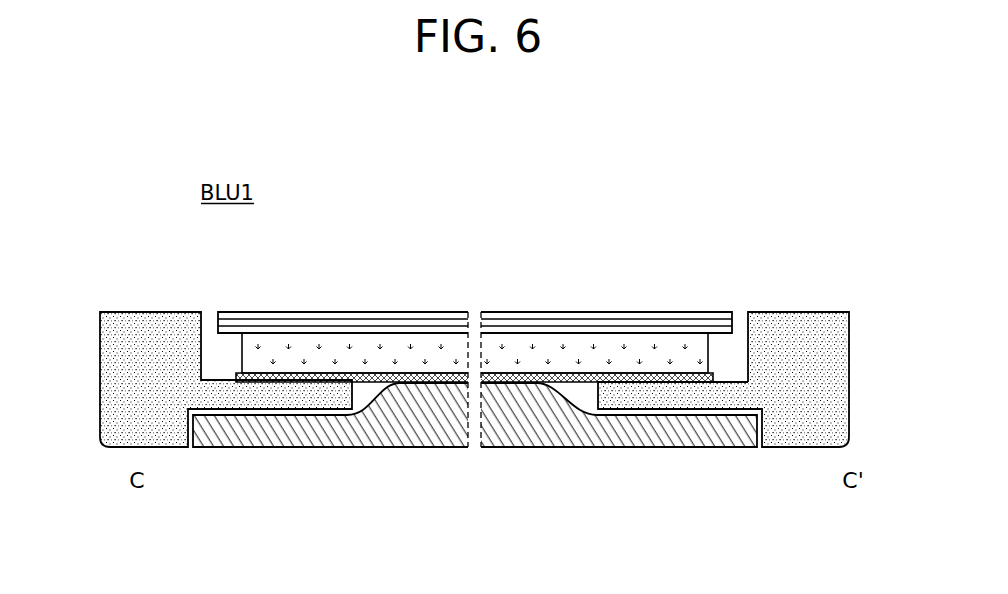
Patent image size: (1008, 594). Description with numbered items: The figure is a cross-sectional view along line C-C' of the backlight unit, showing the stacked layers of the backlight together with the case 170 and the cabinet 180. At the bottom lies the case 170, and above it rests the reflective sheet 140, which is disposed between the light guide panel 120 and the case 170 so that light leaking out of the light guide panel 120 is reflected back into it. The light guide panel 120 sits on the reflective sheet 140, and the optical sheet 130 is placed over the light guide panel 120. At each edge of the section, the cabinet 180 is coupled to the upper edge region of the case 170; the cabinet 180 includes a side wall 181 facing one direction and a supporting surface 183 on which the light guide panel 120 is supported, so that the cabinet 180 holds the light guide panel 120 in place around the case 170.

The light guide panel 120 is at (626, 350).
The optical sheet 130 is at (674, 304).
The reflective sheet 140 is at (579, 378).
The case 170 is at (552, 422).
The cabinet 180 is at (474, 431).
The side wall 181 is at (798, 393).
The supporting surface 183 is at (727, 393).